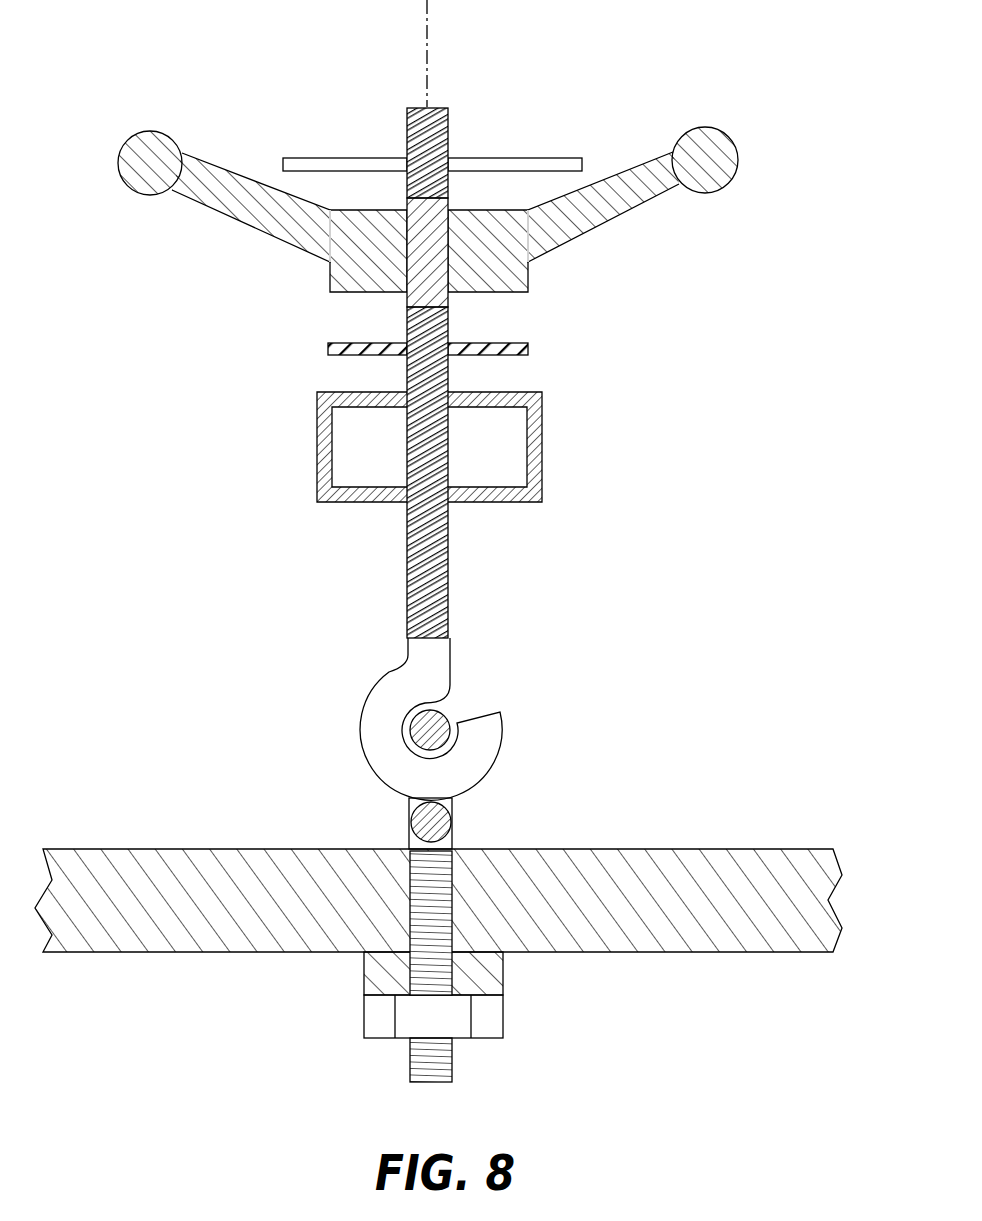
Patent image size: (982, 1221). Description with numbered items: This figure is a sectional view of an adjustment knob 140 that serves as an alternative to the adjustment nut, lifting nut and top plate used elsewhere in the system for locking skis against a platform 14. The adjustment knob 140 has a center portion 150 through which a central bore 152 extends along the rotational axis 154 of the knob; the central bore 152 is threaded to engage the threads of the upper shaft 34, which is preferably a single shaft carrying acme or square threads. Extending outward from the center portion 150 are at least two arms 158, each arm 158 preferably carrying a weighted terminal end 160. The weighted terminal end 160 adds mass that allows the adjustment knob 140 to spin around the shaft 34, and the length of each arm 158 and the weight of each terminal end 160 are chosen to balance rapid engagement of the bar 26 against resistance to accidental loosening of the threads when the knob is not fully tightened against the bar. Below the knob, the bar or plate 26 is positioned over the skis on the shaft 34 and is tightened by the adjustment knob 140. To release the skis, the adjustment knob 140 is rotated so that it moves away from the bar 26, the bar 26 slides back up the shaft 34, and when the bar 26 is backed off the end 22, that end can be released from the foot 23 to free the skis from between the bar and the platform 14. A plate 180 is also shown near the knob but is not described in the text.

The platform 14 is at (807, 893).
The end 22 is at (483, 735).
The foot 23 is at (452, 803).
The bar or plate 26 is at (542, 452).
The upper shaft 34 is at (424, 386).
The adjustment knob 140 is at (409, 205).
The center portion 150 is at (508, 273).
The central bore 152 is at (407, 296).
The rotational axis 154 is at (427, 60).
The arm 158 is at (208, 185).
The weighted terminal end 160 is at (147, 158).
The plate 180 is at (523, 163).